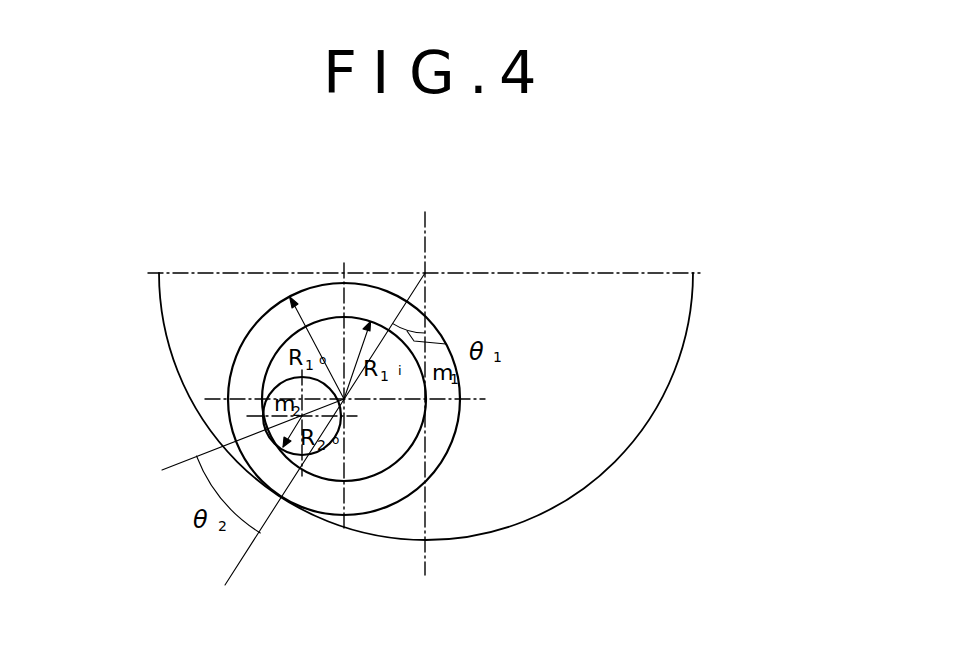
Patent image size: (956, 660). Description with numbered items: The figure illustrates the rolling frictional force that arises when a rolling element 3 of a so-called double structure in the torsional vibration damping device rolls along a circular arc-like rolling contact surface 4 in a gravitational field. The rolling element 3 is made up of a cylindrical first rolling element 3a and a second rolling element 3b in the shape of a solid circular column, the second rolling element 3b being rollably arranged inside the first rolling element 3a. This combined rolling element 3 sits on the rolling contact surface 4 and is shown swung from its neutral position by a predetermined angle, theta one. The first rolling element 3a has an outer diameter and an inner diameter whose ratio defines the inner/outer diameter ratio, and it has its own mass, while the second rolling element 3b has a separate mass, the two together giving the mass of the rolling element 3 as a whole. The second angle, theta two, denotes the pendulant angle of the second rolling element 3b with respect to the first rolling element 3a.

The rolling element 3 is at (384, 409).
The first rolling element 3a is at (379, 493).
The second rolling element 3b is at (284, 382).
The rolling contact surface 4 is at (586, 485).